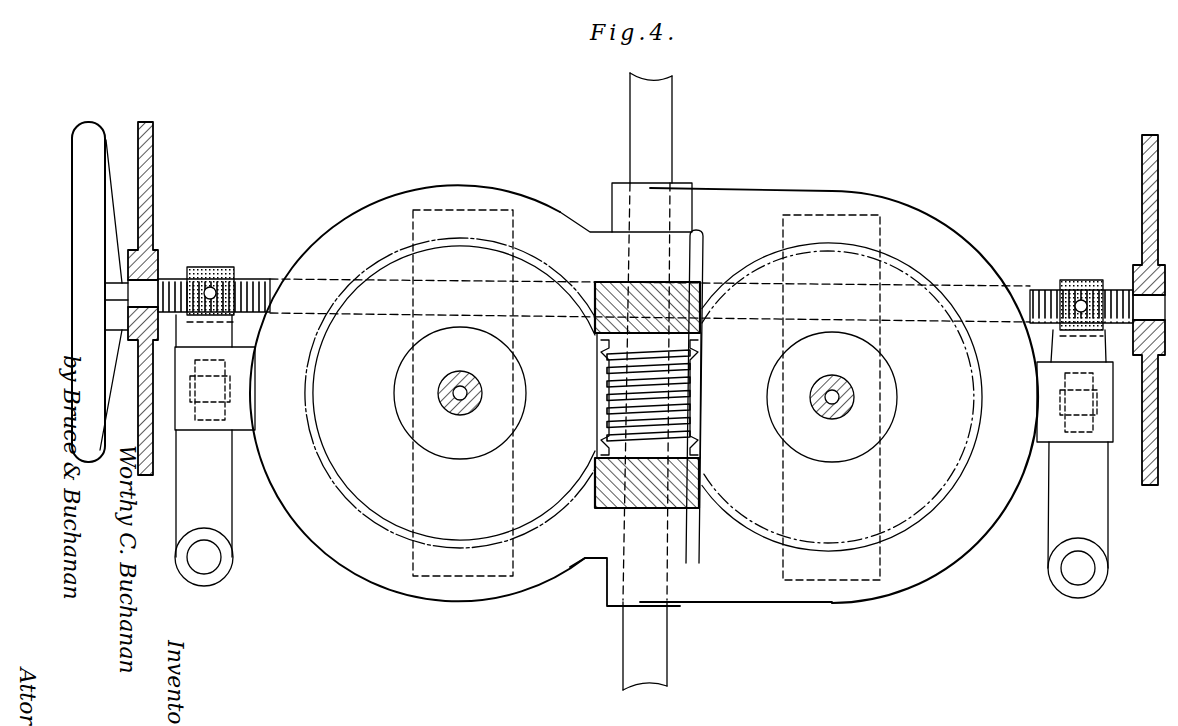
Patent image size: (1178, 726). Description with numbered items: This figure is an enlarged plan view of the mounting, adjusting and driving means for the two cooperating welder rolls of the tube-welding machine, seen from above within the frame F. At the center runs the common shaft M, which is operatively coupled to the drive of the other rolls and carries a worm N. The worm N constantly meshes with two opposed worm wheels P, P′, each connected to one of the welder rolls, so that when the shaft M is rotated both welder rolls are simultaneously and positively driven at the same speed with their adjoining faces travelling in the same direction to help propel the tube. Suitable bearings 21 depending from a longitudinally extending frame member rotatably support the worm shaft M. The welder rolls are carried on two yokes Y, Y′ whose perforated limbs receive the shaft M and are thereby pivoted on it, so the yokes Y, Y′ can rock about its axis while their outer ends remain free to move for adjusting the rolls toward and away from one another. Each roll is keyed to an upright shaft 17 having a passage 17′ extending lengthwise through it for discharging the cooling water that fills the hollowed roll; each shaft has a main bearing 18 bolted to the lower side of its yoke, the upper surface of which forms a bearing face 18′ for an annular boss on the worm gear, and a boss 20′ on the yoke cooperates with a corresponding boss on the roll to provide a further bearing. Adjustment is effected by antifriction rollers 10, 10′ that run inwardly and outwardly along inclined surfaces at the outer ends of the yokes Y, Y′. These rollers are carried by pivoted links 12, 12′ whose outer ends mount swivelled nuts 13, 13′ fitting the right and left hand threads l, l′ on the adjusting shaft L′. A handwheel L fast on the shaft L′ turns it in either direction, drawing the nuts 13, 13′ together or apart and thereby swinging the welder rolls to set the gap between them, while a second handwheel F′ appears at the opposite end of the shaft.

The yoke Y is at (452, 194).
The yoke Y′ is at (802, 196).
The common shaft M is at (672, 128).
The frame F is at (153, 214).
The right handwheel F′ is at (1142, 216).
The handwheel L is at (72, 292).
The shaft L′ is at (276, 284).
The threaded screw l is at (240, 312).
The threaded screw (right) l′ is at (1044, 288).
The swivelled nut 13 is at (222, 322).
The swivelled nut 13′ is at (1062, 338).
The antifriction roller 10 is at (225, 392).
The antifriction roller 10′ is at (1062, 396).
The pivoted link 12 is at (234, 530).
The pivoted link 12′ is at (1055, 515).
The shaft 17 is at (440, 392).
The passage 17′ is at (458, 398).
The boss 20′ is at (452, 460).
The worm wheel P is at (595, 396).
The worm wheel P′ is at (702, 403).
The worm N is at (600, 430).
The bearing 21 is at (596, 508).
The main bearing 18 is at (810, 580).
The bearing face 18′ is at (413, 572).